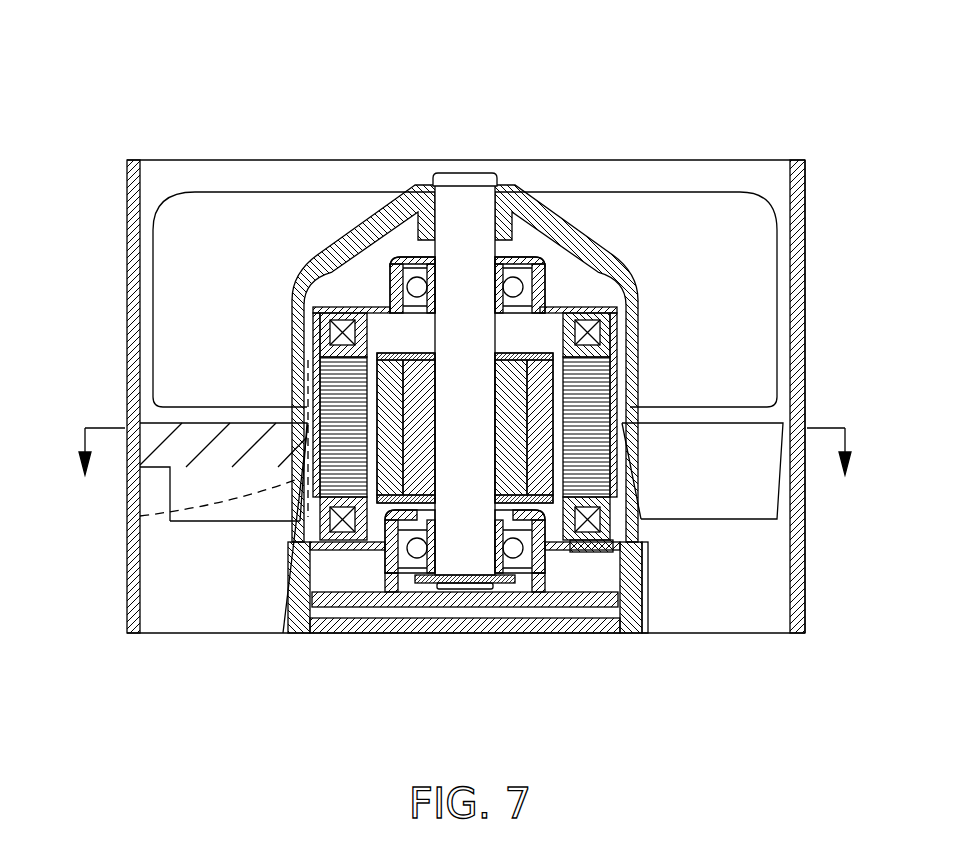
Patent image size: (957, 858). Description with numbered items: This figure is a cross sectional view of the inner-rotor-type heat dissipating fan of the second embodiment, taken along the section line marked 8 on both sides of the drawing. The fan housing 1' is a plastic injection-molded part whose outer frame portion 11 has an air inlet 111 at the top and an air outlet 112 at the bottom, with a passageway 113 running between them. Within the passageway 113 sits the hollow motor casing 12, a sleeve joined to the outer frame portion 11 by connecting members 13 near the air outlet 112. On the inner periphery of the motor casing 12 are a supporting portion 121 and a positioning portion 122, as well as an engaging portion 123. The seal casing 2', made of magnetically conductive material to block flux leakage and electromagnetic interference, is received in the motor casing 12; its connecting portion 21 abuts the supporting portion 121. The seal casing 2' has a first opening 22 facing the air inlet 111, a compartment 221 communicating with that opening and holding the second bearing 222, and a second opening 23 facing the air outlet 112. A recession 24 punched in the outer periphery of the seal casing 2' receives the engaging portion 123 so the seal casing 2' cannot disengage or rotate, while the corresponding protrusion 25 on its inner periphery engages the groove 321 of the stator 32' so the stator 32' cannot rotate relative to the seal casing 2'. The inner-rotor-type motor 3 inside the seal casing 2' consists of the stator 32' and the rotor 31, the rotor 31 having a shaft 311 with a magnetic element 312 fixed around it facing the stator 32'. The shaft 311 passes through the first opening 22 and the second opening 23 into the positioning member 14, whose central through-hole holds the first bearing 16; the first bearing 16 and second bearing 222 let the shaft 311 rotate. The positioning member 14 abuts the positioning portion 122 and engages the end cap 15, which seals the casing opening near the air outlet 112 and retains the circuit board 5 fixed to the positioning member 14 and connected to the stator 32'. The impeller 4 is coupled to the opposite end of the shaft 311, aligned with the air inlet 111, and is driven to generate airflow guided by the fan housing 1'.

The fan housing 1' is at (817, 335).
The air inlet 111 is at (167, 158).
The outer frame portion 11 is at (140, 597).
The air outlet 112 is at (168, 598).
The passageway 113 is at (148, 285).
The engaging portion 123 is at (297, 407).
The seal casing 2' is at (494, 374).
The groove 321 is at (148, 527).
The connecting members 13 is at (217, 513).
The motor casing 12 is at (282, 600).
The connecting portion 21 is at (762, 521).
The supporting portion 121 is at (628, 518).
The impeller 4 is at (370, 220).
The shaft 311 is at (442, 217).
The second bearing 222 is at (402, 257).
The compartment 221 is at (542, 268).
The first opening 22 is at (513, 258).
The inner-rotor-type motor 3 is at (682, 97).
The protrusion 25 is at (317, 393).
The recession 24 is at (310, 357).
The stator 32' is at (541, 322).
The rotor 31 is at (537, 335).
The magnetic element 312 is at (392, 375).
The first bearing 16 is at (405, 585).
The positioning member 14 is at (565, 598).
The circuit board 5 is at (330, 612).
The end cap 15 is at (480, 625).
The second opening 23 is at (604, 553).
The positioning portion 122 is at (641, 532).
The section line 8- 8 is at (463, 489).